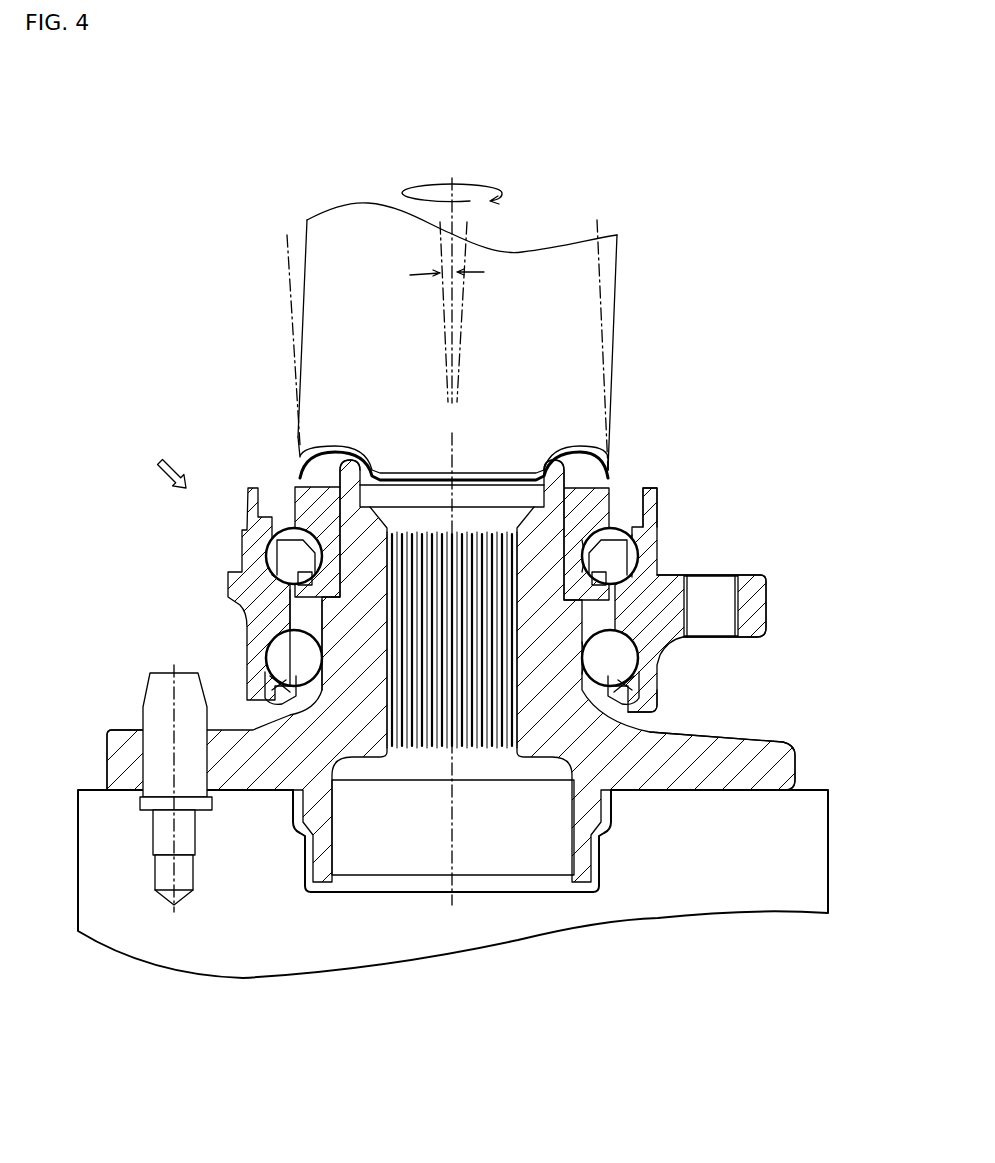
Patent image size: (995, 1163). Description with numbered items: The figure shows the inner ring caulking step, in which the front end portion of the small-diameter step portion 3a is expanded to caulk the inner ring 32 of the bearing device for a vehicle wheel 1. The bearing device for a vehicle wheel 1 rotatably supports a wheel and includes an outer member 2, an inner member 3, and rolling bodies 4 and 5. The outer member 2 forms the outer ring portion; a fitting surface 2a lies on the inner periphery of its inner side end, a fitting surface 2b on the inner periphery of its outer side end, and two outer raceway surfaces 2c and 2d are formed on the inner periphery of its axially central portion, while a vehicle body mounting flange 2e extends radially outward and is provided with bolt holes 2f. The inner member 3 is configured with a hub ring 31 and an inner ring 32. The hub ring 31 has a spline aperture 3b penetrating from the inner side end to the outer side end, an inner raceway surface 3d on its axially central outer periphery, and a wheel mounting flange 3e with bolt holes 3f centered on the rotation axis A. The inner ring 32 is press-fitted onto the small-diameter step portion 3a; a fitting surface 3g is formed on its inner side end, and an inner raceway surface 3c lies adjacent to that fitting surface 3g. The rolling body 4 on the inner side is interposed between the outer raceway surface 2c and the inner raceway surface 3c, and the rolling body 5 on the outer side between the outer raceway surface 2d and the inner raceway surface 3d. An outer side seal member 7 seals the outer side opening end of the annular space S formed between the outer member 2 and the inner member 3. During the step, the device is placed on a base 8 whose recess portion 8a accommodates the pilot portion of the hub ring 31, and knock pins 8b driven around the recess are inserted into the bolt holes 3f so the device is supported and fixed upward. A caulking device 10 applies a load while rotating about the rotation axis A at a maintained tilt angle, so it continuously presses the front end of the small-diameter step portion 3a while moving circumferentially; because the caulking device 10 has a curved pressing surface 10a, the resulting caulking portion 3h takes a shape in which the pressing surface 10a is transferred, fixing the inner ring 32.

The bearing device for a vehicle wheel 1 is at (163, 462).
The outer member 2 is at (205, 586).
The fitting surface 2a is at (637, 512).
The fitting surface 2b is at (633, 695).
The outer raceway surface 2c is at (630, 557).
The outer raceway surface 2d is at (637, 661).
The vehicle body mounting flange 2e is at (766, 606).
The bolt hole 2f is at (733, 580).
The inner member 3 is at (628, 400).
The hub ring 31 is at (578, 458).
The inner ring 32 is at (605, 470).
The small-diameter step portion 3a is at (312, 512).
The spline aperture 3b is at (490, 755).
The inner raceway surface 3c is at (590, 550).
The inner raceway surface 3d is at (598, 668).
The wheel mounting flange 3e is at (797, 771).
The bolt hole 3f is at (132, 793).
The fitting surface 3g is at (612, 513).
The caulking portion 3h is at (325, 462).
The rolling body 4 is at (313, 550).
The rolling body 5 is at (313, 660).
The outer side seal member 7 is at (249, 699).
The base 8 is at (826, 880).
The recess portion 8a is at (396, 888).
The knock pin 8b is at (148, 692).
The caulking device 10 is at (620, 306).
The pressing surface 10a is at (335, 455).
The rotation axis A is at (452, 541).
The annular space S is at (297, 604).